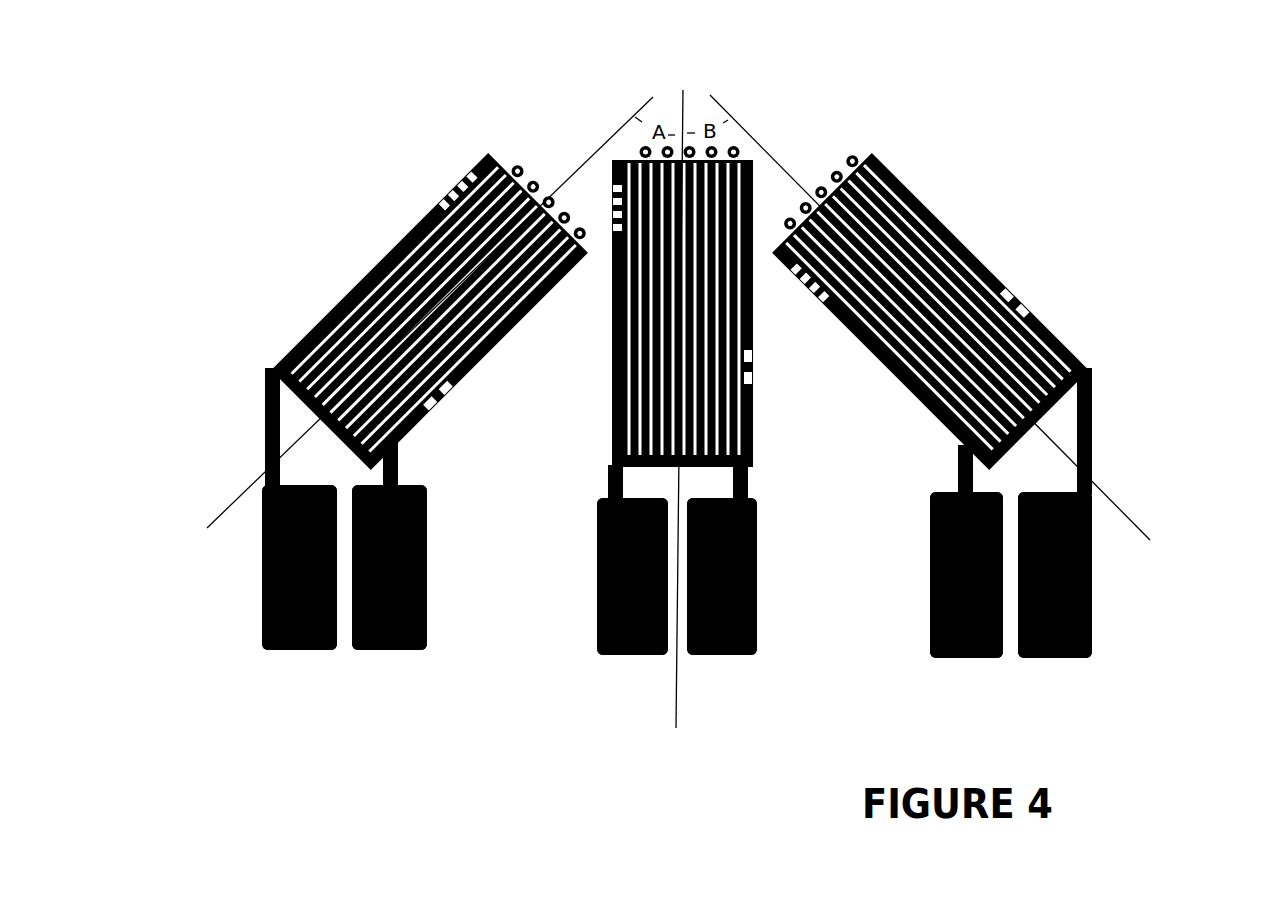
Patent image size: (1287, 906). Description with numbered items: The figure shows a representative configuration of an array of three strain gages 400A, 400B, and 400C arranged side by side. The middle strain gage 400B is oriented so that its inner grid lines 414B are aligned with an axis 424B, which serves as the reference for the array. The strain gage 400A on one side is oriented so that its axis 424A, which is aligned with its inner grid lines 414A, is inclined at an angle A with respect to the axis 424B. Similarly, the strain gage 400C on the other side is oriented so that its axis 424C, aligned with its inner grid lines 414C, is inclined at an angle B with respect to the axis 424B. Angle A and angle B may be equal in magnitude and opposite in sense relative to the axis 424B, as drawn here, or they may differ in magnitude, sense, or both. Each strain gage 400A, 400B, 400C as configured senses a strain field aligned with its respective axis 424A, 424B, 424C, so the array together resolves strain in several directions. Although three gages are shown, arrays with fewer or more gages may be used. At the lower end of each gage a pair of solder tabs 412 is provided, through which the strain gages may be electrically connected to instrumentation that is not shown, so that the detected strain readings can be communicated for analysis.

The strain gage 400A is at (412, 361).
The strain gage 400B is at (642, 329).
The strain gage 400C is at (963, 363).
The inner grid lines 414A is at (440, 370).
The inner grid lines 414B is at (730, 306).
The inner grid lines 414C is at (1058, 342).
The solder tabs 412 is at (733, 606).
The axis 424A is at (378, 312).
The axis 424B is at (761, 420).
The axis 424C is at (989, 317).